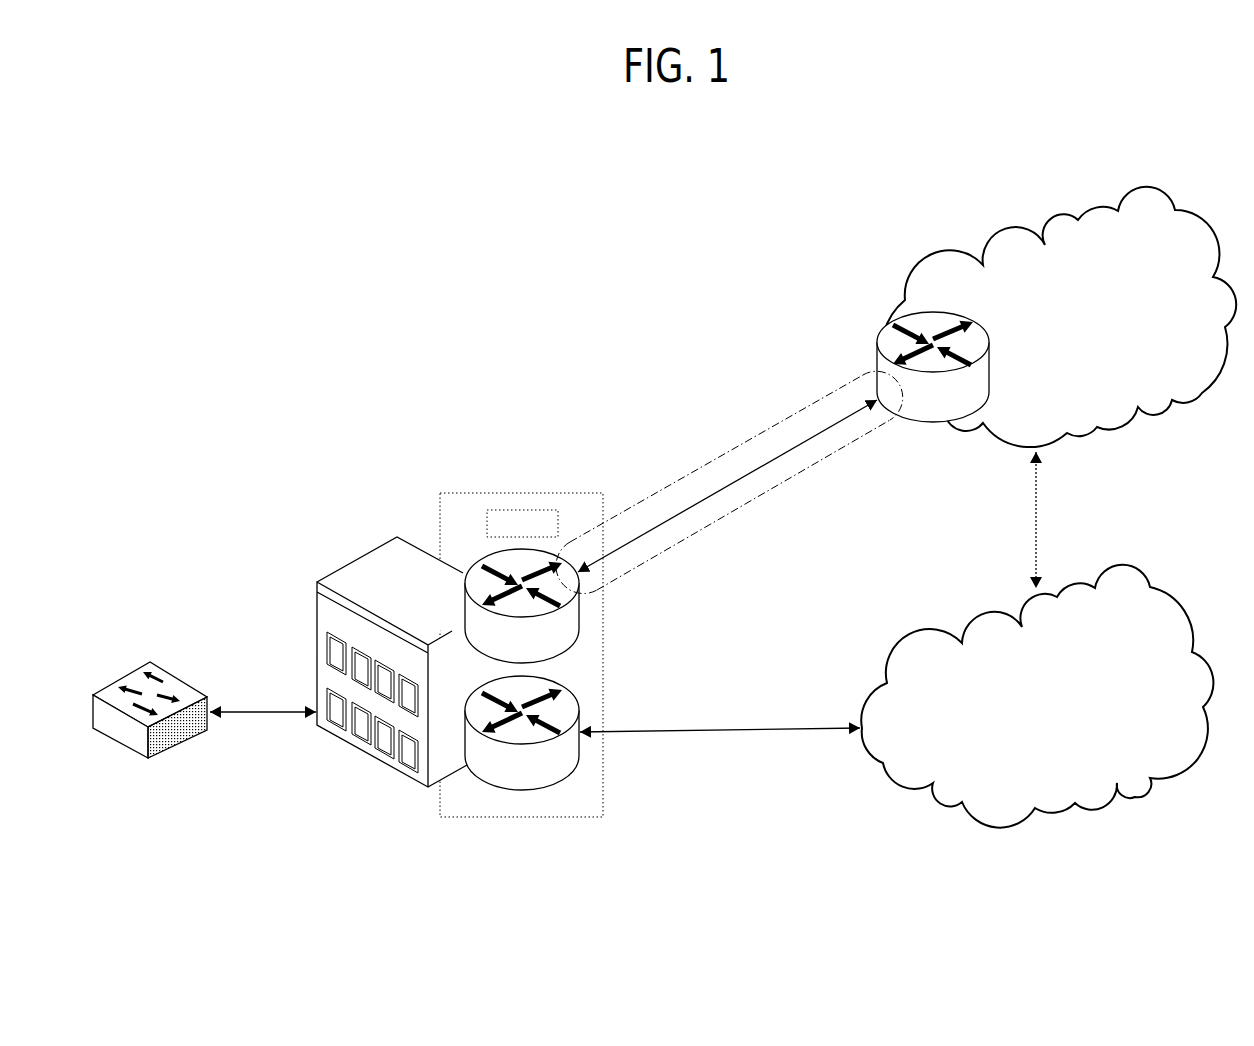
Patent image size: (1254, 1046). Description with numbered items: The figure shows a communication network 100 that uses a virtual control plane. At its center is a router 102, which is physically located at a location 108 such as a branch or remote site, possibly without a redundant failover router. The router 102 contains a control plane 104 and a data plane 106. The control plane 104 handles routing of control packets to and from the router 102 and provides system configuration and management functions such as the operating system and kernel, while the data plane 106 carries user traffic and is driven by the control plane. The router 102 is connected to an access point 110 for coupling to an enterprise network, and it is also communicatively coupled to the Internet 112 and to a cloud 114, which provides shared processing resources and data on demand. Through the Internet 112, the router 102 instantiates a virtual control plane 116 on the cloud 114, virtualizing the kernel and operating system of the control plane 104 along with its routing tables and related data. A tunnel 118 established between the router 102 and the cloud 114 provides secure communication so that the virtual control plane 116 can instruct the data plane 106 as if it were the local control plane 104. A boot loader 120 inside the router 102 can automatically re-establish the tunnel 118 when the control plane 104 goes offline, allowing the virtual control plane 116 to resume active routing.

The communication network 100 is at (1034, 84).
The router 102 is at (455, 490).
The control plane 104 is at (582, 628).
The data plane 106 is at (582, 711).
The location 108 is at (362, 548).
The access point 110 is at (152, 660).
The Internet 112 is at (1133, 560).
The cloud 114 is at (928, 260).
The virtual control plane 116 is at (984, 324).
The tunnel 118 is at (730, 450).
The boot loader 120 is at (540, 507).